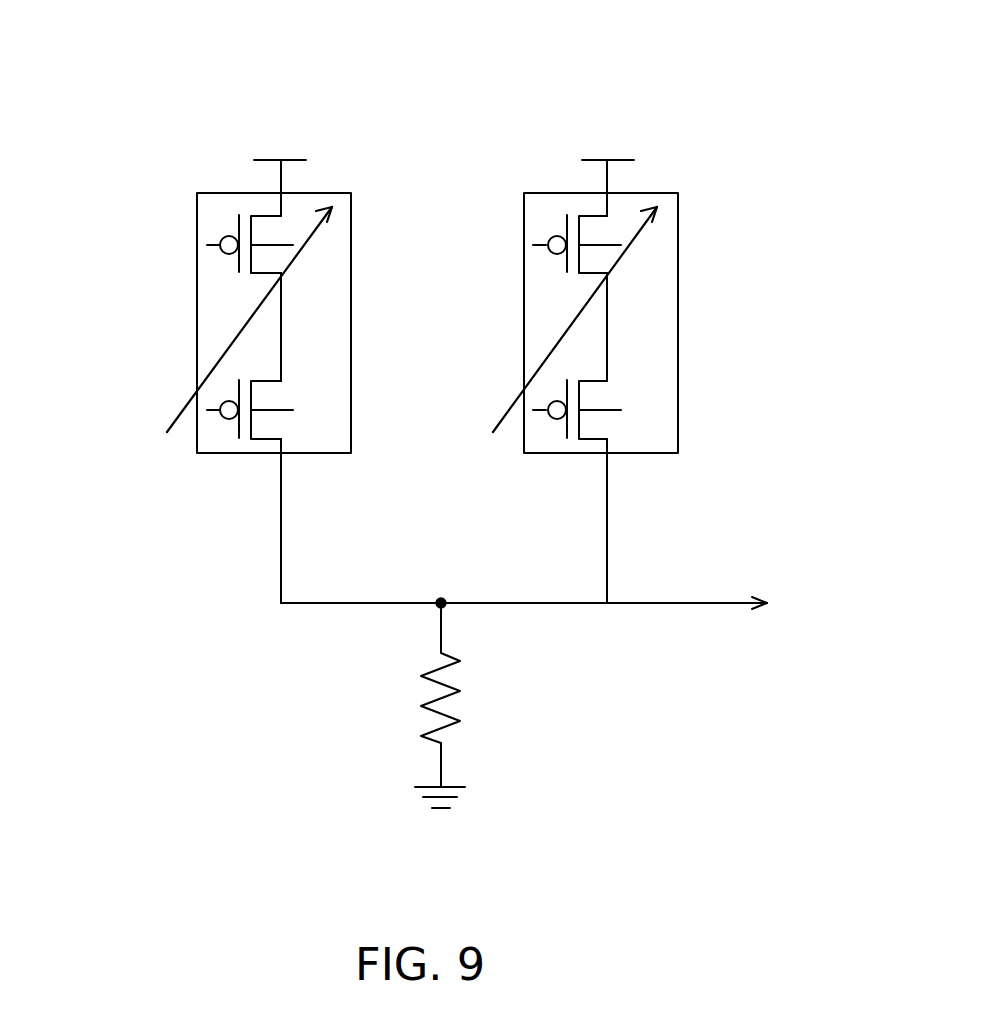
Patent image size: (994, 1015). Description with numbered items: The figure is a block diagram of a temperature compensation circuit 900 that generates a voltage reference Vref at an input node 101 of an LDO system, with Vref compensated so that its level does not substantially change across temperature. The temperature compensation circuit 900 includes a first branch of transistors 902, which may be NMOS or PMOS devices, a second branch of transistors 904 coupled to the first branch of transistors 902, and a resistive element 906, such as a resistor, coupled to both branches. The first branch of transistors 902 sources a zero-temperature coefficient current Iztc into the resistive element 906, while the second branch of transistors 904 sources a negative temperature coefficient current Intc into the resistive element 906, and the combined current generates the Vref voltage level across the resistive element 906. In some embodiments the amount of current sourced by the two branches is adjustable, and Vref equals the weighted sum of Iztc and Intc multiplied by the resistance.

The temperature compensation circuit 900 is at (157, 98).
The first branch of transistors 902 is at (202, 207).
The second branch of transistors 904 is at (664, 220).
The resistive element 906 is at (425, 692).
The input node 101 is at (551, 615).